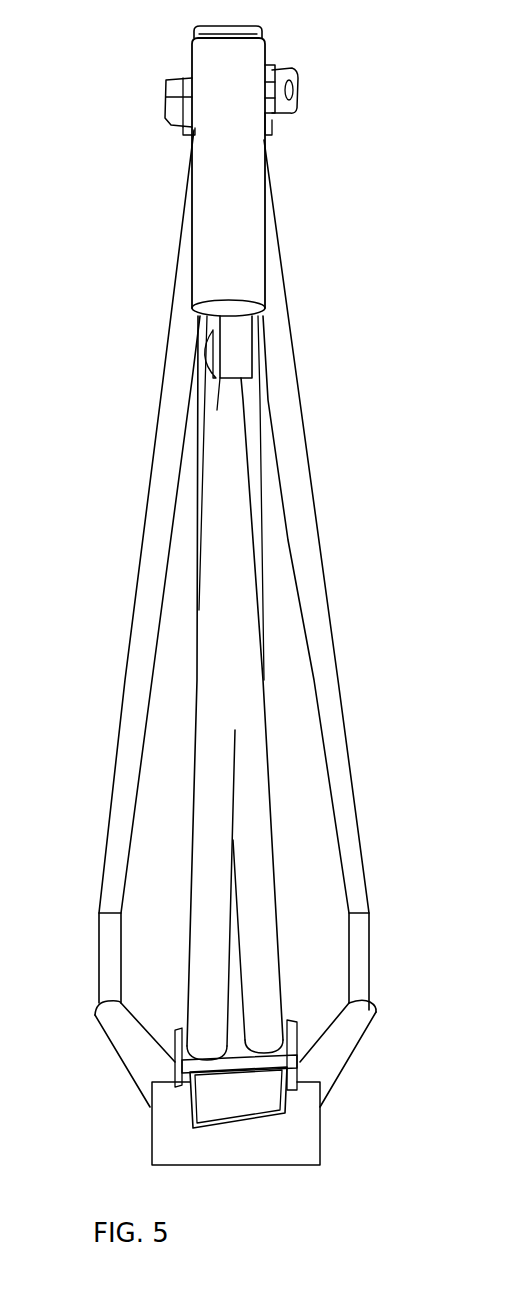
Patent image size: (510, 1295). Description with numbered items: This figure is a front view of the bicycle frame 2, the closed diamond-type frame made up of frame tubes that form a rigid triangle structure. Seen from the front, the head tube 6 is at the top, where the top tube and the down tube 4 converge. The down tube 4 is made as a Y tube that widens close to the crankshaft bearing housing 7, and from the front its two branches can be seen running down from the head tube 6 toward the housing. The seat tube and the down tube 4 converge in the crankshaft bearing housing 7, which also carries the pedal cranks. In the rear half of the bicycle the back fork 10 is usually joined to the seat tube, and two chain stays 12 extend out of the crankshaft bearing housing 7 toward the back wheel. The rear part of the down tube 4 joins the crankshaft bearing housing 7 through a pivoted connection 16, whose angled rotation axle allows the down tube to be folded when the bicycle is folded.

The bicycle frame 2 is at (333, 291).
The down tube 4 is at (272, 873).
The head tube 6 is at (200, 206).
The crankshaft bearing housing 7 is at (328, 730).
The back fork 10 is at (140, 578).
The chain stays 12 is at (104, 1035).
The pivoted connection 16 is at (180, 1108).